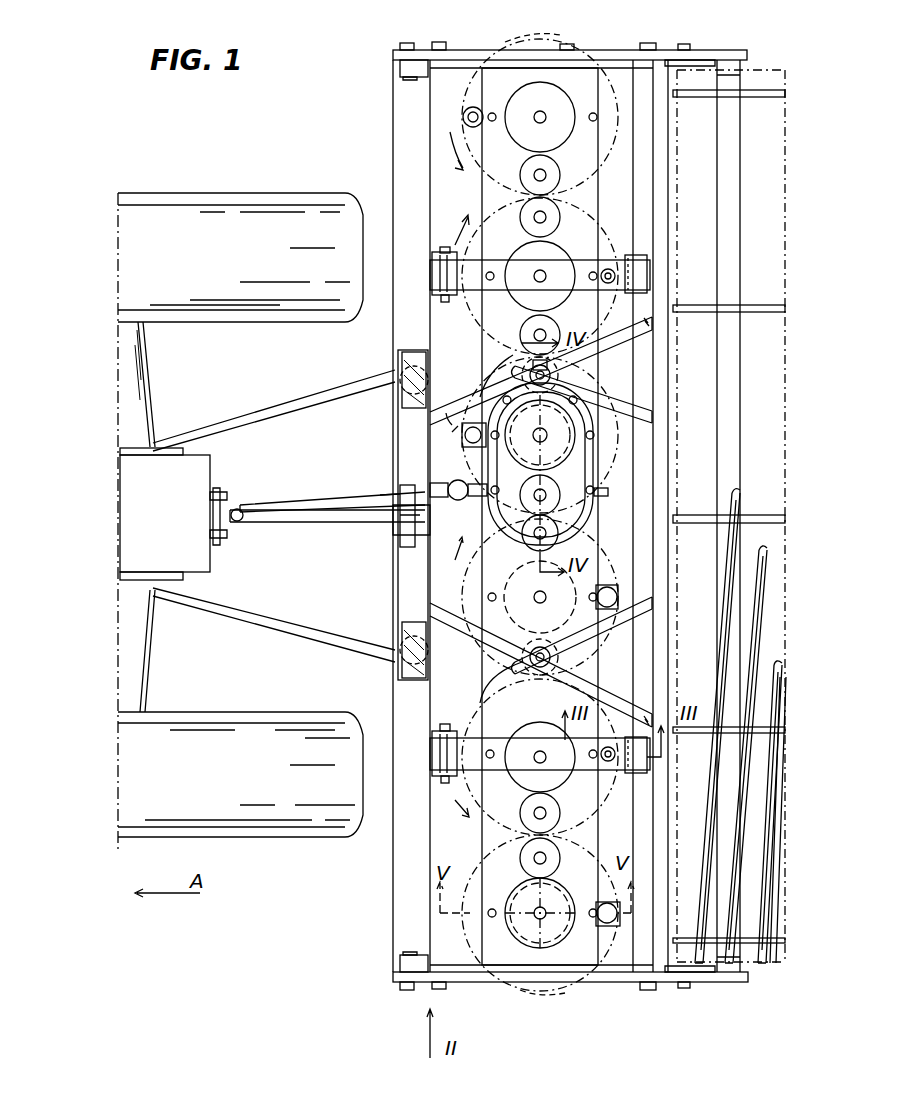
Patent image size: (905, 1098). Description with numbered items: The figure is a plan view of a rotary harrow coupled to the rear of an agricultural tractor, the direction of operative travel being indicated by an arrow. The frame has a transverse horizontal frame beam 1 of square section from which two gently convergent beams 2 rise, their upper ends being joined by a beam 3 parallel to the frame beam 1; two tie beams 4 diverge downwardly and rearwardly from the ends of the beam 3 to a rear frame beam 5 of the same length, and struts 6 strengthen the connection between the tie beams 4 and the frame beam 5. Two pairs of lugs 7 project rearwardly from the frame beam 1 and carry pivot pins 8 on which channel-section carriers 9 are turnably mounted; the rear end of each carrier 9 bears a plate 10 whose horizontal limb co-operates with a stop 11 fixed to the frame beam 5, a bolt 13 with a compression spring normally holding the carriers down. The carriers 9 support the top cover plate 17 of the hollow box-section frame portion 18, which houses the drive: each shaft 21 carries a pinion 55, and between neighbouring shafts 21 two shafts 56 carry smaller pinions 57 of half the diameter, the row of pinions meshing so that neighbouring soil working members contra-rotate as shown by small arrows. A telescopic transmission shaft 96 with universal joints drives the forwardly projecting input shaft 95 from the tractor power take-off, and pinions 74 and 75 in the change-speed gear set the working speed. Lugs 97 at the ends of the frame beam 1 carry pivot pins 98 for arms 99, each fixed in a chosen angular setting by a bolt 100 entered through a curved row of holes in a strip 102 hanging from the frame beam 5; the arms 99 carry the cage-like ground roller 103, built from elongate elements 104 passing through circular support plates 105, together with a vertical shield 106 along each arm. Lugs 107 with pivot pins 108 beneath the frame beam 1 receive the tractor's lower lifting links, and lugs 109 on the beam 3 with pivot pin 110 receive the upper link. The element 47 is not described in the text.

The frame beam 1 is at (393, 150).
The beams 2 is at (398, 408).
The beam 3 is at (398, 462).
The tie beams 4 is at (458, 410).
The frame beam 5 is at (665, 568).
The struts 6 is at (610, 408).
The lugs 7 is at (428, 290).
The pivot pins 8 is at (446, 302).
The carriers 9 is at (512, 265).
The plate 10 is at (614, 246).
The stop 11 is at (650, 268).
The bolt 13 is at (592, 288).
The top cover plate 17 is at (483, 190).
The hollow box-section frame portion 18 is at (485, 204).
The shaft 21 is at (543, 920).
The bearing 47 is at (608, 930).
The pinion 55 is at (560, 108).
The shafts 56 is at (530, 168).
The pinion 57 is at (585, 195).
The pinion 74 is at (592, 450).
The pinion 75 is at (465, 500).
The rotary input shaft 95 is at (604, 498).
The telescopic transmission shaft 96 is at (330, 494).
The lugs 97 is at (395, 64).
The pivot pins 98 is at (405, 42).
The arms 99 is at (452, 54).
The bolt 100 is at (655, 43).
The strips 102 is at (692, 62).
The ground roller 103 is at (786, 728).
The elongate elements 104 is at (770, 870).
The support plates 105 is at (786, 516).
The shield 106 is at (488, 48).
The lugs 107 is at (428, 362).
The pivot pins 108 is at (400, 348).
The lugs 109 is at (459, 544).
The pivot pin 110 is at (398, 558).